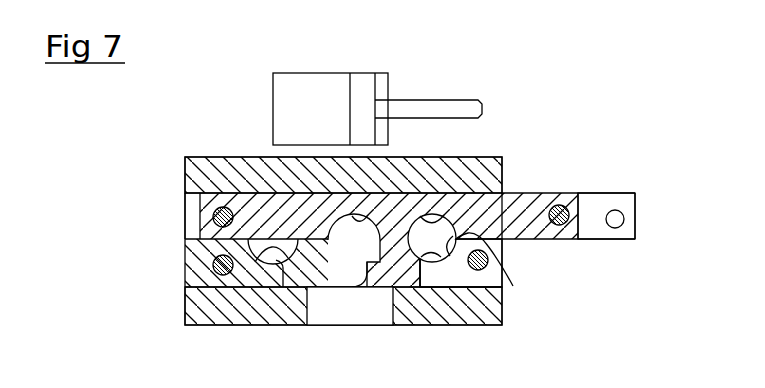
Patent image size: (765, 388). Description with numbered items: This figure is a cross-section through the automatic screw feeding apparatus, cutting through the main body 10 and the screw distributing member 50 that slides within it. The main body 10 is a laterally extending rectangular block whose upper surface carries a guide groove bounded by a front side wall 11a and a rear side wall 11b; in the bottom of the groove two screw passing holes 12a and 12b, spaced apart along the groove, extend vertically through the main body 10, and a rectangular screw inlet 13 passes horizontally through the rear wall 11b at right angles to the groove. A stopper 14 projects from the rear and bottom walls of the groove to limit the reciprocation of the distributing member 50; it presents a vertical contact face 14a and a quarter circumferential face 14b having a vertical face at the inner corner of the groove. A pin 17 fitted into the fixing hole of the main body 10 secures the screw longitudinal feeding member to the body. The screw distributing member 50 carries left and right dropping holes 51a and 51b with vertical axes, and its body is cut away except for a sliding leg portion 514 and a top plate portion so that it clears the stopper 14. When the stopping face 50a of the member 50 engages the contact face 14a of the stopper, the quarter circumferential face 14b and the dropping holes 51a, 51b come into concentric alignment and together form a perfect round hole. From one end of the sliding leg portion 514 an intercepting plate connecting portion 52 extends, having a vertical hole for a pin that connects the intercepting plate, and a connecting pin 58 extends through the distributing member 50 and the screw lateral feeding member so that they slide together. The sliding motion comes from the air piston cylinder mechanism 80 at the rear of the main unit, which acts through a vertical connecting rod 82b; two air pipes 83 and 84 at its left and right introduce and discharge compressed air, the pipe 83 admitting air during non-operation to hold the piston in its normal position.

The main body 10 is at (178, 171).
The front side wall 11a is at (197, 157).
The rear side wall 11b is at (185, 313).
The screw passing hole 12a is at (250, 262).
The screw passing hole 12b is at (447, 265).
The screw inlet 13 is at (313, 325).
The stopper 14 is at (185, 270).
The contact face 14a is at (283, 280).
The quarter circumferential face 14b is at (268, 262).
The pin 17 is at (513, 286).
The screw distributing member 50 is at (195, 208).
The stopping face 50a is at (356, 282).
The dropping hole 51a is at (368, 213).
The dropping hole 51b is at (449, 221).
The sliding leg portion 514 is at (195, 222).
The intercepting plate connecting portion 52 is at (625, 193).
The connecting pin 58 is at (578, 193).
The air piston cylinder mechanism 80 is at (273, 102).
The vertical connecting rod 82b is at (624, 219).
The air pipe 83 is at (378, 64).
The air pipe 84 is at (282, 66).